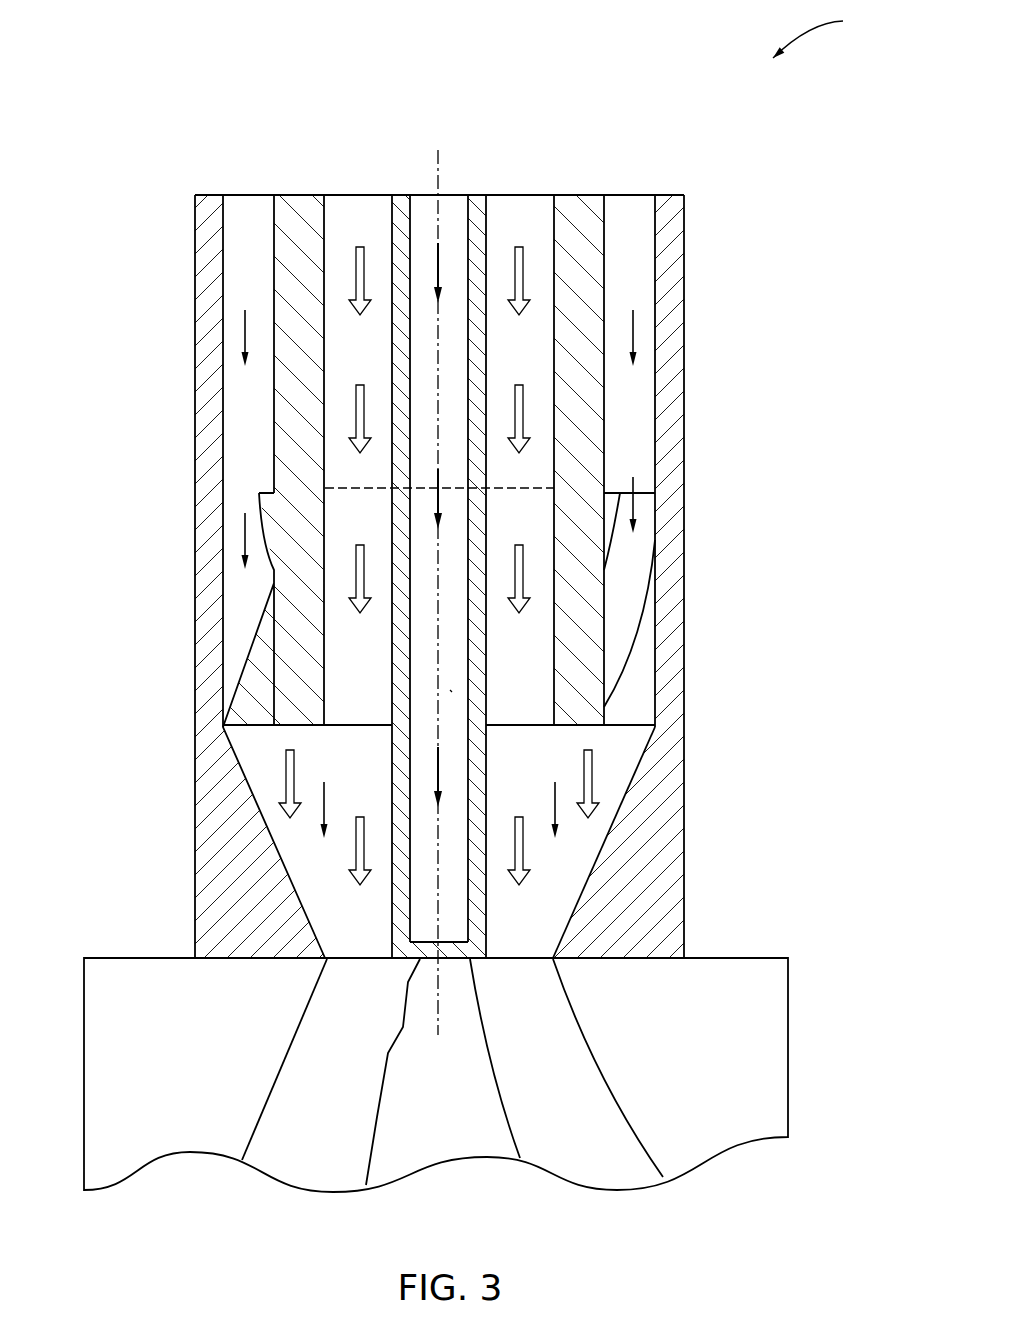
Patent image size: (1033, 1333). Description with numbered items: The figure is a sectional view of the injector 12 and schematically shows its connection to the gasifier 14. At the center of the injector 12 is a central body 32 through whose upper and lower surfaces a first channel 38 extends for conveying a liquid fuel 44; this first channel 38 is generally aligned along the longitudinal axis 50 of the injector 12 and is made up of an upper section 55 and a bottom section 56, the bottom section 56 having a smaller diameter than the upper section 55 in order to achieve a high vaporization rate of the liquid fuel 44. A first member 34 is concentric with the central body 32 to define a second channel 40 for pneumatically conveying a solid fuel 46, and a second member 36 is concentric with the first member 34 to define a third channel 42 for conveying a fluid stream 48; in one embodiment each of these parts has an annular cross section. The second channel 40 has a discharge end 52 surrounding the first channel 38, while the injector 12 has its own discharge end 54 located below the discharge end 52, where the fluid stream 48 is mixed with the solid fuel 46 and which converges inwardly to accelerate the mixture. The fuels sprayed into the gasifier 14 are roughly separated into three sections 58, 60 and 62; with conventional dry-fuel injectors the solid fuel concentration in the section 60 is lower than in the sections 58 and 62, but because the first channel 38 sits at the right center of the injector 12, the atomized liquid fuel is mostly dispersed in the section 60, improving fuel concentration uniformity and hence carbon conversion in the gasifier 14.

The injector 12 is at (824, 32).
The gasifier 14 is at (757, 958).
The central body 32 is at (405, 198).
The first member 34 is at (300, 198).
The second member 36 is at (205, 198).
The first channel 38 is at (455, 198).
The second channel 40 is at (518, 198).
The third channel 42 is at (633, 198).
The liquid fuel 44 is at (437, 770).
The solid fuel 46 is at (352, 404).
The fluid stream 48 is at (245, 535).
The longitudinal axis 50 is at (440, 347).
The discharge end of the second channel 52 is at (537, 617).
The discharge end of the injector 54 is at (568, 855).
The upper section of the first channel 55 is at (450, 690).
The bottom section of the first channel 56 is at (432, 945).
The section 58 is at (328, 1118).
The section 60 is at (425, 1102).
The section 62 is at (537, 1104).